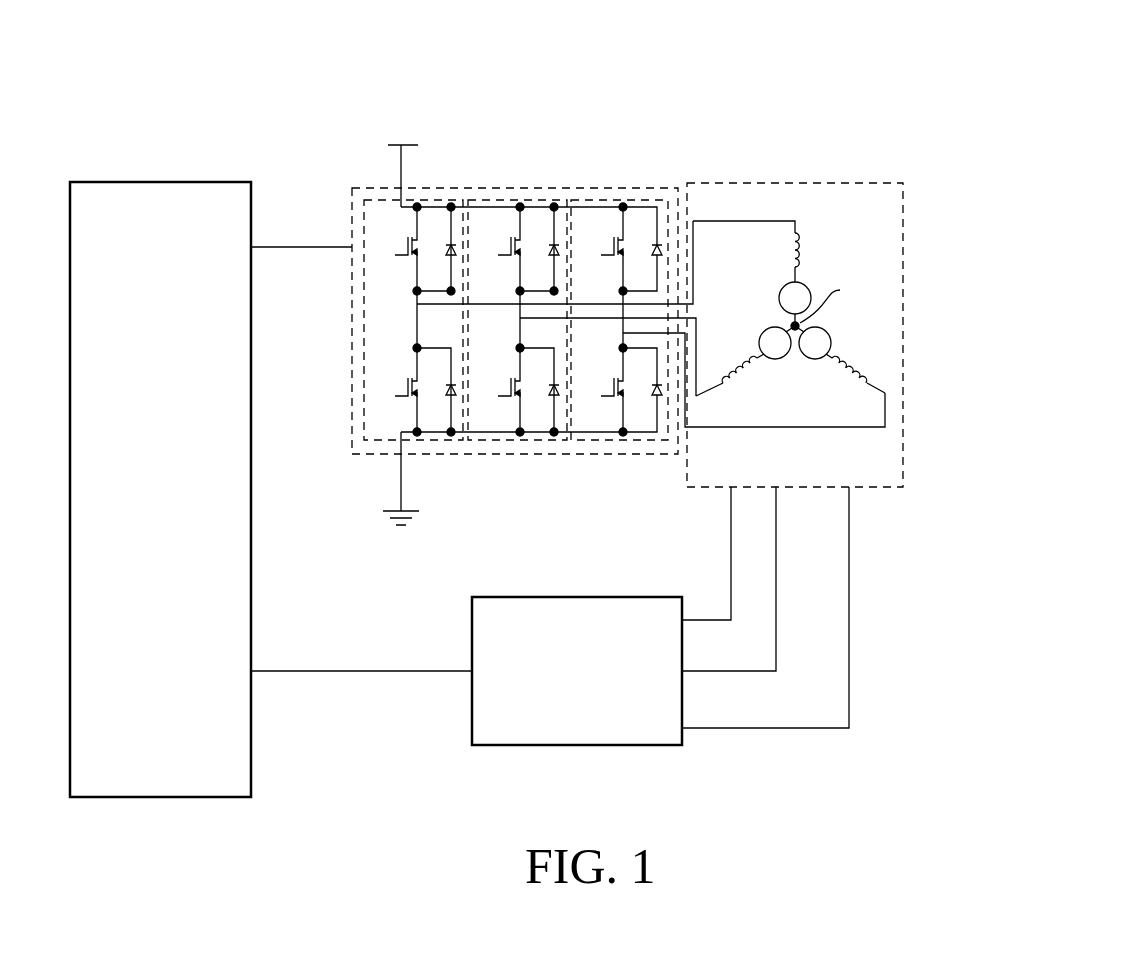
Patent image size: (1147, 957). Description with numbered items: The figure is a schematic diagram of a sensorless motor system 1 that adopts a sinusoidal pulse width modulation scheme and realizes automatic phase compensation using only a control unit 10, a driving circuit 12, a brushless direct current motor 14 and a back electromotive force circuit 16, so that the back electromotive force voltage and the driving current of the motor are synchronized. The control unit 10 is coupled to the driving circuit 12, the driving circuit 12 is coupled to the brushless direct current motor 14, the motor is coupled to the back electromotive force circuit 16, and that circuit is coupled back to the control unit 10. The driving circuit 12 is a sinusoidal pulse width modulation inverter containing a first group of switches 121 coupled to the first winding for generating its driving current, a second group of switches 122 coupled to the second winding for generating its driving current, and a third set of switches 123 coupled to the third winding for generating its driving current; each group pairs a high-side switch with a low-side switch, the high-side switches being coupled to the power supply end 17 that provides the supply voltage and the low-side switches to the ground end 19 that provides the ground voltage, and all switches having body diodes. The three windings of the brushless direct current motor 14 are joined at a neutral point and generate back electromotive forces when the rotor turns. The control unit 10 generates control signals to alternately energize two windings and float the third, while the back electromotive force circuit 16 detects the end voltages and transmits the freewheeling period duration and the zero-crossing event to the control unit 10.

The sensorless motor system 1 is at (1028, 120).
The control unit 10 is at (178, 182).
The driving circuit 12 is at (551, 188).
The first group of switches 121 is at (423, 199).
The second group of switches 122 is at (487, 199).
The third set of switches 123 is at (608, 199).
The brushless direct current motor 14 is at (795, 183).
The back electromotive force circuit 16 is at (568, 597).
The power supply end 17 is at (420, 152).
The ground end 19 is at (408, 512).